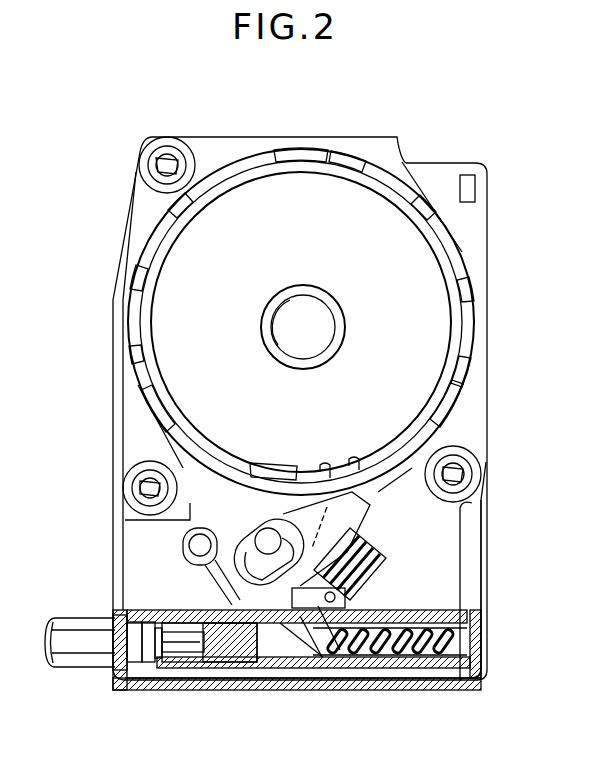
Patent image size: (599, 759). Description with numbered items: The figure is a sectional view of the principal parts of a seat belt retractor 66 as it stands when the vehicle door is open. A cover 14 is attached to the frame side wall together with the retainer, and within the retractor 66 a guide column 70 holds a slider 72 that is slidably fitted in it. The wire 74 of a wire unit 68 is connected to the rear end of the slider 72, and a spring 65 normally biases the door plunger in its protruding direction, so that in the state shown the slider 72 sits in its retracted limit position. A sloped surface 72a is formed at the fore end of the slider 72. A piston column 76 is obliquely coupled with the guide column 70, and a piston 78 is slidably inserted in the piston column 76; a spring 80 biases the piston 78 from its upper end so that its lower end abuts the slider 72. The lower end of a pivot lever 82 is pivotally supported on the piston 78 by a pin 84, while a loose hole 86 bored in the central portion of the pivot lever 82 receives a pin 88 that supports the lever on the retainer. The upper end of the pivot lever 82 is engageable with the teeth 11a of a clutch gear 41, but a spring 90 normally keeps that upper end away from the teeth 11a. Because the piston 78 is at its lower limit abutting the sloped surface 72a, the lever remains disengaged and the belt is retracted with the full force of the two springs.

The cover 14 is at (243, 163).
The seat belt retractor 66 is at (454, 155).
The teeth 11a is at (182, 205).
The clutch gear 41 is at (467, 320).
The pin 88 is at (270, 538).
The loose hole 86 is at (246, 560).
The pivot lever 82 is at (362, 508).
The spring 80 is at (375, 556).
The piston column 76 is at (380, 582).
The pin 84 is at (350, 598).
The spring 90 is at (192, 565).
The guide column 70 is at (437, 610).
The wire unit 68 is at (73, 668).
The wire 74 is at (160, 667).
The slider 72 is at (287, 655).
The sloped surface 72a is at (323, 667).
The piston 78 is at (363, 660).
The spring 65 is at (447, 673).